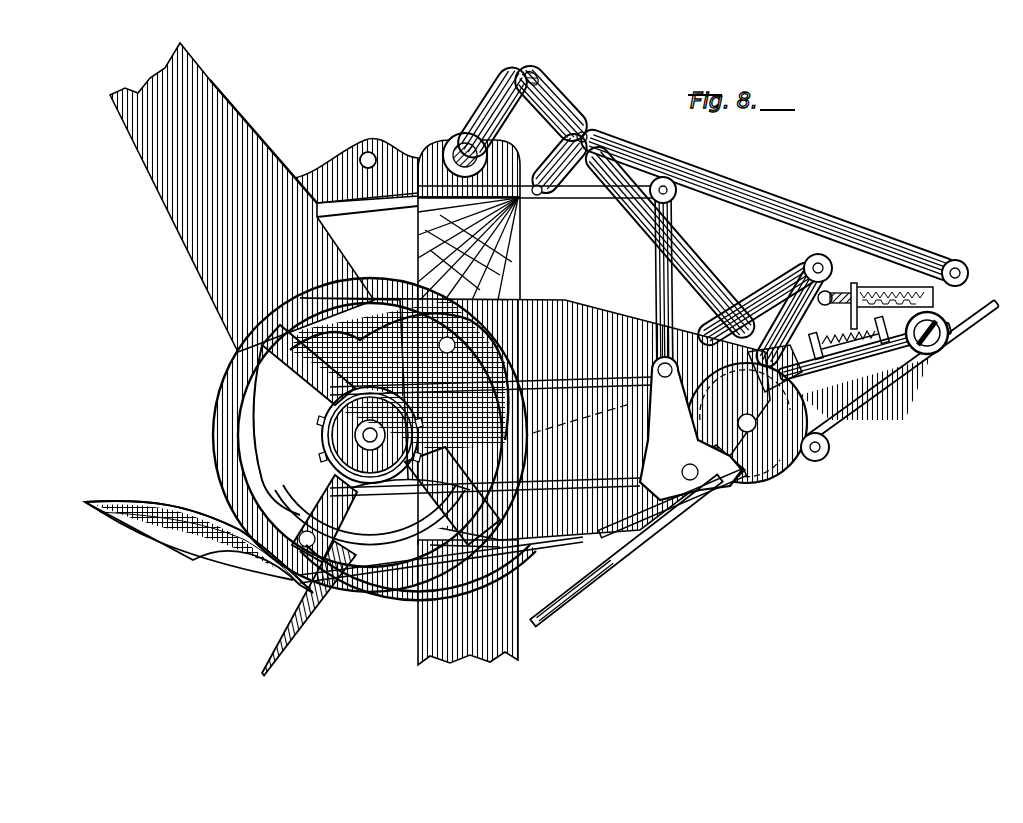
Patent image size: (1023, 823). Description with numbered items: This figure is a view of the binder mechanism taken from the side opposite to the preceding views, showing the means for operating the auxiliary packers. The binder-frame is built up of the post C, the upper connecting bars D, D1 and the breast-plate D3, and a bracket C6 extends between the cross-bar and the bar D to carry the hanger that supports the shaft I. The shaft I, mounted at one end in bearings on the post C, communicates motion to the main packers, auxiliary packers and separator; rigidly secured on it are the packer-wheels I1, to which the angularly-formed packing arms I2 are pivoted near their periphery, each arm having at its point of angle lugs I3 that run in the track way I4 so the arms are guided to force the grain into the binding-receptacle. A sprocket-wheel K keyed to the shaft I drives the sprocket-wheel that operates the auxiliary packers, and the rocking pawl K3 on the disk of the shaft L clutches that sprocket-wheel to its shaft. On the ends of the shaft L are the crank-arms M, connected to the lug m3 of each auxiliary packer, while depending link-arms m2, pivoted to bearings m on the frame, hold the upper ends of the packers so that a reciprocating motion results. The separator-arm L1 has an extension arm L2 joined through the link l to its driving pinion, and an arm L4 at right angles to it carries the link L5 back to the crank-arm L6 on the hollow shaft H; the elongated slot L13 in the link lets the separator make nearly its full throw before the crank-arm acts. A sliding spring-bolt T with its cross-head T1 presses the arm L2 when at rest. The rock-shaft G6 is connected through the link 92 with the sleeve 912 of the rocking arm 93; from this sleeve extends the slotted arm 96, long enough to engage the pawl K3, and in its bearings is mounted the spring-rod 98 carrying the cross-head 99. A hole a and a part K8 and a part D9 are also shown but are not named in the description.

The upper connecting bar D1 is at (252, 232).
The upper connecting bar D is at (520, 270).
The post C is at (510, 634).
The bracket C6 is at (338, 162).
The hole a is at (386, 160).
The hollow shaft H is at (447, 147).
The crank-arm L6 is at (500, 78).
The elongated slot L13 is at (540, 72).
The rock-shaft G6 is at (537, 200).
The link 92 is at (790, 208).
The rocking arm 93 is at (968, 276).
The bearings m is at (582, 196).
The depending link-arms m2 is at (657, 290).
The link L5 is at (684, 260).
The link l is at (740, 296).
The extension arm L2 is at (788, 280).
The rocking pawl K3 is at (772, 350).
The cross-head T1 is at (832, 292).
The sliding spring-bolt T is at (893, 288).
The cross-head 99 is at (808, 342).
The arm 96 is at (880, 370).
The spring-rod 98 is at (890, 392).
The sleeve 912 is at (950, 340).
The crank-arm M is at (742, 482).
The pawl K8 is at (740, 440).
The lug m3 is at (684, 492).
The arm L4 is at (814, 462).
The breast-plate D3 is at (658, 512).
The separator-arm L1 is at (560, 546).
The plate D9 is at (640, 446).
The shaft I is at (366, 437).
The packer-wheels I1 is at (235, 450).
The sprocket-wheel K is at (324, 427).
The packing arms I2 is at (368, 296).
The lugs I3 is at (348, 545).
The track way I4 is at (380, 555).